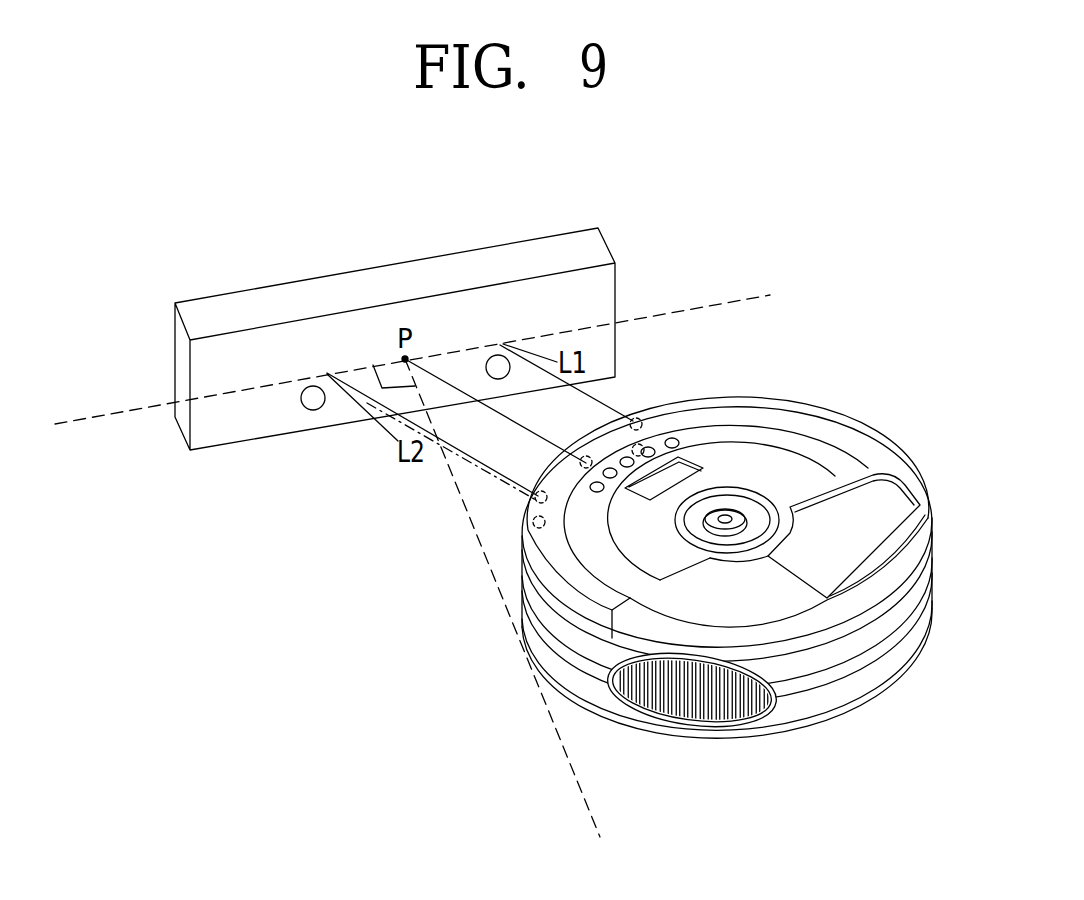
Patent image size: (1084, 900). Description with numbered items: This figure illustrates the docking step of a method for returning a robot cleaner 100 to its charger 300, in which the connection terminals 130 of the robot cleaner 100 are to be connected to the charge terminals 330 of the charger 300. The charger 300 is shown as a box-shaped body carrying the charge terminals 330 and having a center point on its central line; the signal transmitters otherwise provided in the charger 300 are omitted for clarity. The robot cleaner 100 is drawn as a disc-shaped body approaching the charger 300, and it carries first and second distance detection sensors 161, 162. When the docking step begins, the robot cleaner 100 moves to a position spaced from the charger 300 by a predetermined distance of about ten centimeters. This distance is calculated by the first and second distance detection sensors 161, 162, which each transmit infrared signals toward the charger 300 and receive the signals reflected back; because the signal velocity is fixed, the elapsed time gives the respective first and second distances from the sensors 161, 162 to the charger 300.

The robot cleaner 100 is at (822, 415).
The connection terminals 130 is at (638, 457).
The first distance detection sensor 161 is at (635, 417).
The second distance detection sensor 162 is at (522, 502).
The charger 300 is at (586, 240).
The charge terminals 330 is at (497, 365).